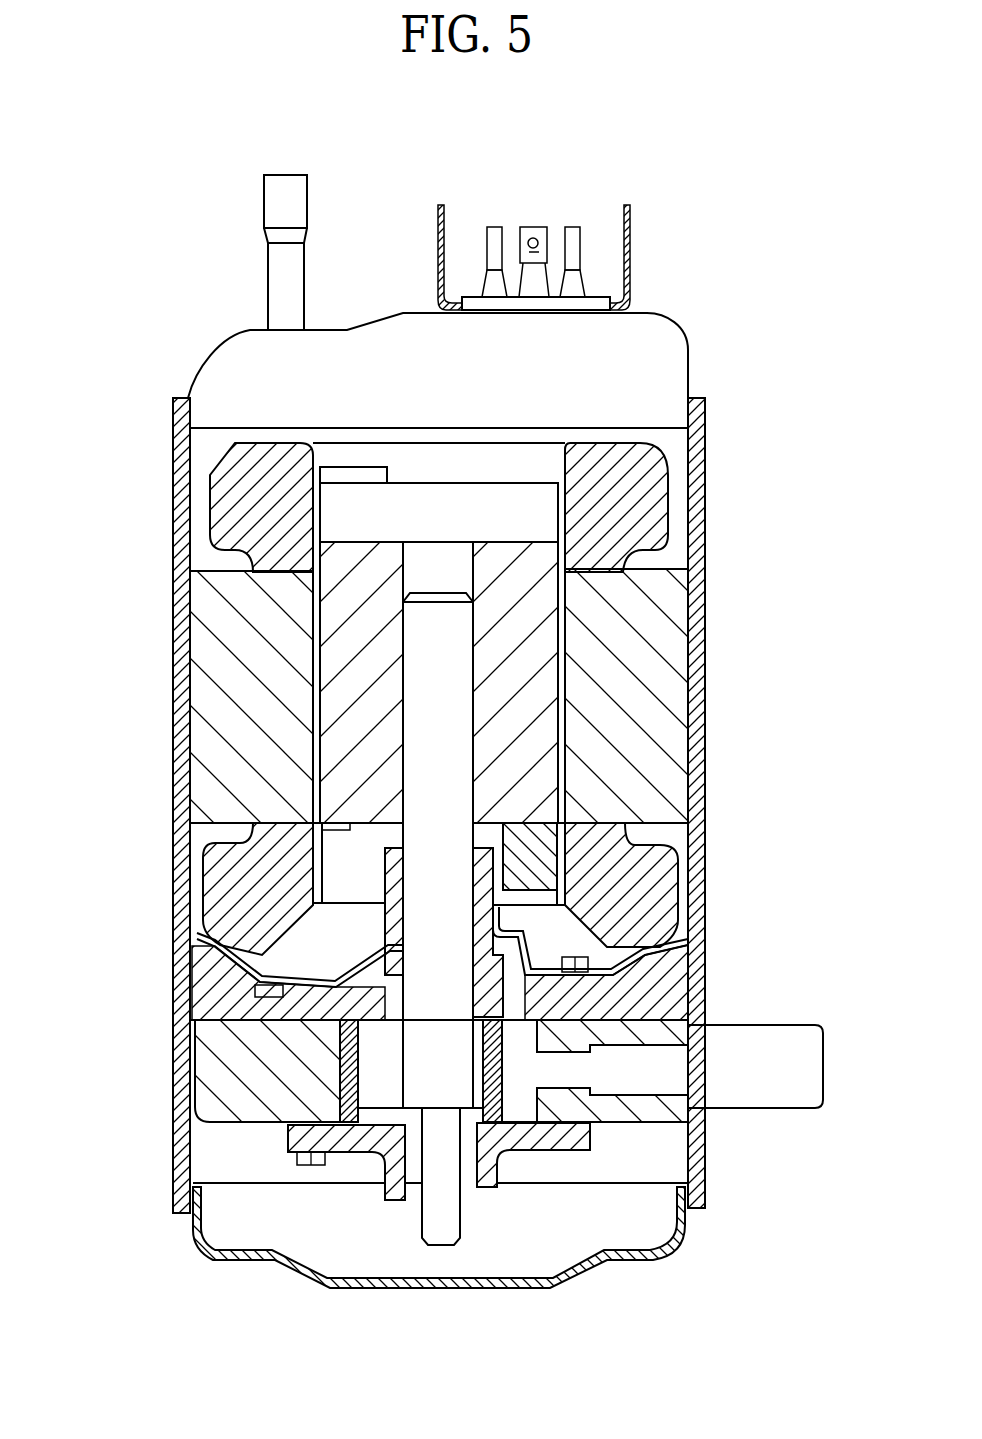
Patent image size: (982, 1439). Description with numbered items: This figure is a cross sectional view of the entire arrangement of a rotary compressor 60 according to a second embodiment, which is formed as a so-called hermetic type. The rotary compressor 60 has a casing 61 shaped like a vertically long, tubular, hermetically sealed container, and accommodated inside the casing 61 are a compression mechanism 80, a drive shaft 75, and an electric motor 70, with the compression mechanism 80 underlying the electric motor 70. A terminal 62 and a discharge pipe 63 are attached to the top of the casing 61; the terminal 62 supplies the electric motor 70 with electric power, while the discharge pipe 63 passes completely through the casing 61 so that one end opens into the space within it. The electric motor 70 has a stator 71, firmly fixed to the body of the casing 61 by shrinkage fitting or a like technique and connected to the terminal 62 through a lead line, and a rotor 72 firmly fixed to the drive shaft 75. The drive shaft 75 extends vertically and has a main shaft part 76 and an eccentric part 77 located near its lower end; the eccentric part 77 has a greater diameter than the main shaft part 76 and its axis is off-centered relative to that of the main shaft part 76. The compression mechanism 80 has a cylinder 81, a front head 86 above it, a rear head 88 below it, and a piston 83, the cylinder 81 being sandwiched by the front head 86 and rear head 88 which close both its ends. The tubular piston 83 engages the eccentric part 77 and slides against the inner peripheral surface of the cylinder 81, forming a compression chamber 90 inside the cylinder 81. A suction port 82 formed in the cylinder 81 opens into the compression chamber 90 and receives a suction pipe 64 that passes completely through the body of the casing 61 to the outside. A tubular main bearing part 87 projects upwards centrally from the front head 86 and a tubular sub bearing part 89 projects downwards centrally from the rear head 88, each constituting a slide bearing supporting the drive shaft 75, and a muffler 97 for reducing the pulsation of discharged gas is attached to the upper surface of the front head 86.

The rotary compressor 60 is at (133, 198).
The casing 61 is at (213, 363).
The terminal 62 is at (536, 228).
The discharge pipe 63 is at (307, 189).
The suction pipe 64 is at (670, 1067).
The electric motor 70 is at (662, 472).
The stator 71 is at (655, 592).
The rotor 72 is at (537, 649).
The drive shaft 75 is at (440, 593).
The main shaft part 76 is at (412, 645).
The eccentric part 77 is at (375, 1090).
The compression mechanism 80 is at (652, 1128).
The cylinder 81 is at (228, 1128).
The suction port 82 is at (572, 1072).
The piston 83 is at (508, 1105).
The front head 86 is at (225, 962).
The main bearing part 87 is at (395, 847).
The rear head 88 is at (285, 1136).
The sub bearing part 89 is at (397, 1187).
The compression chamber 90 is at (522, 1123).
The muffler 97 is at (605, 932).